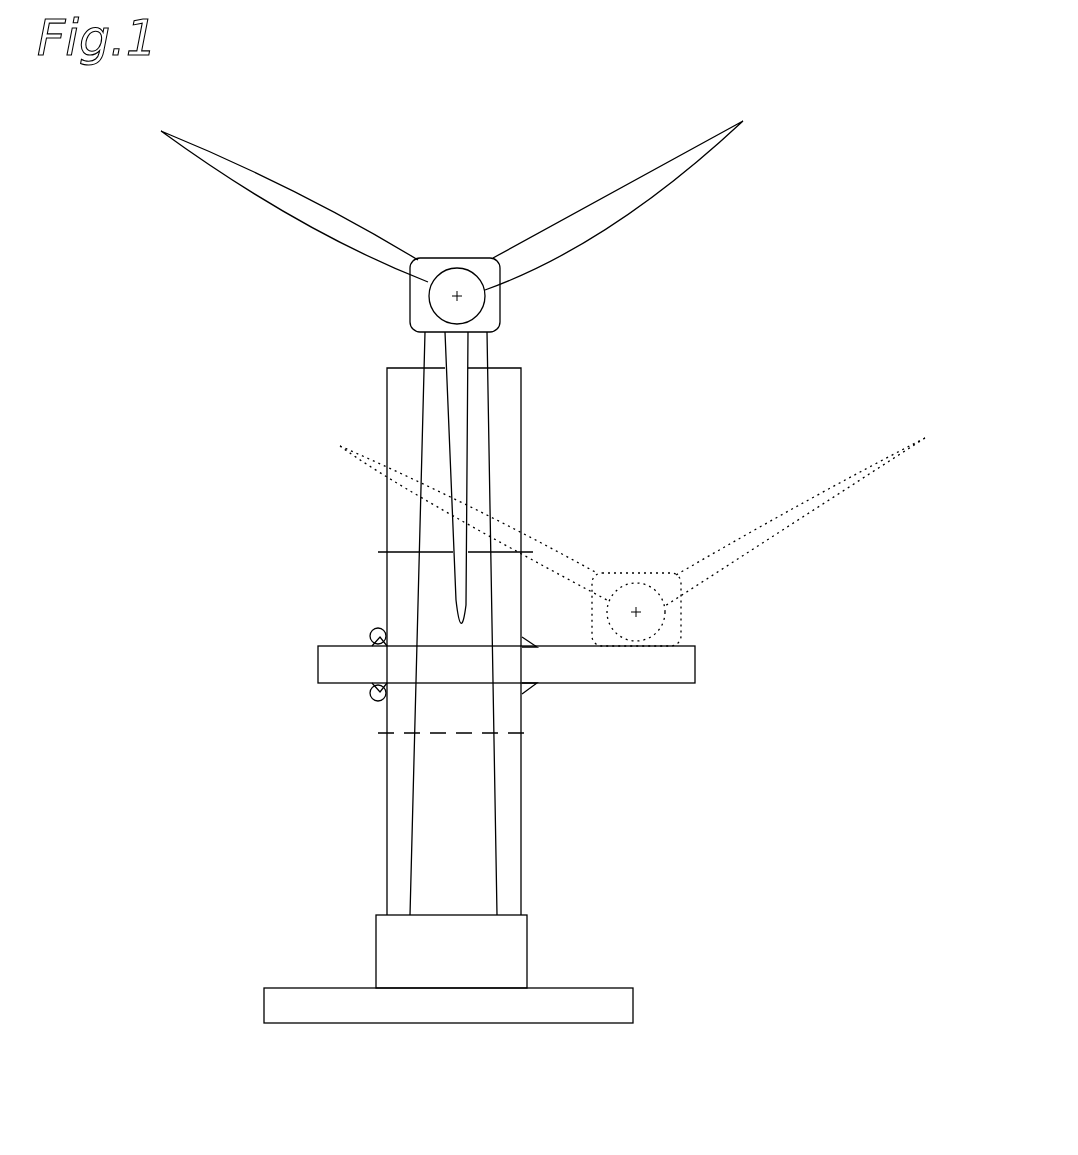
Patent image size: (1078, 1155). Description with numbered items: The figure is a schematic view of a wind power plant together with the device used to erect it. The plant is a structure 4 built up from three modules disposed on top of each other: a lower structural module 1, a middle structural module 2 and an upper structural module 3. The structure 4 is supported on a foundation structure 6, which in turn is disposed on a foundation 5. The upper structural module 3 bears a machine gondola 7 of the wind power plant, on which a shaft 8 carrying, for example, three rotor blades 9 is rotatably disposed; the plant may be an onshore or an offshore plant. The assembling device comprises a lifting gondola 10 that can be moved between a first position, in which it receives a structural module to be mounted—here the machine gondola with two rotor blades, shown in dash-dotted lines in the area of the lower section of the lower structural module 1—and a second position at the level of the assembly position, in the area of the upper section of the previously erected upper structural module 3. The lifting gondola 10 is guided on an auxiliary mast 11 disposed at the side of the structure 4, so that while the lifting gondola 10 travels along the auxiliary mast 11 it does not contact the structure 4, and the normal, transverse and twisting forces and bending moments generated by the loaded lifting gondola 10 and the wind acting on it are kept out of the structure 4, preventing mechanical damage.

The lower structural module 1 is at (485, 870).
The structural module 2 is at (483, 713).
The upper structural module 3 is at (483, 466).
The structure 4 is at (495, 422).
The foundation 5 is at (633, 1000).
The foundation structure 6 is at (522, 943).
The machine gondola 7 is at (497, 320).
The shaft 8 is at (458, 283).
The rotor blades 9 is at (316, 214).
The lifting gondola 10 is at (688, 663).
The auxiliary mast 11 is at (527, 806).